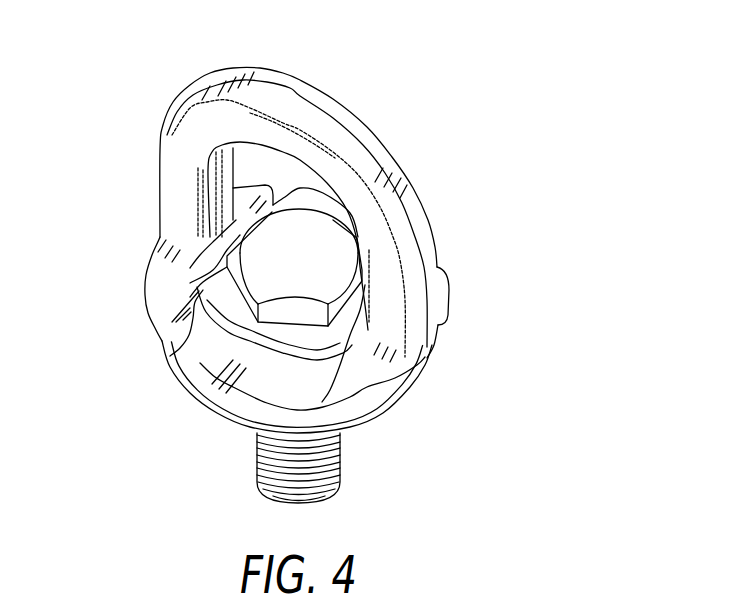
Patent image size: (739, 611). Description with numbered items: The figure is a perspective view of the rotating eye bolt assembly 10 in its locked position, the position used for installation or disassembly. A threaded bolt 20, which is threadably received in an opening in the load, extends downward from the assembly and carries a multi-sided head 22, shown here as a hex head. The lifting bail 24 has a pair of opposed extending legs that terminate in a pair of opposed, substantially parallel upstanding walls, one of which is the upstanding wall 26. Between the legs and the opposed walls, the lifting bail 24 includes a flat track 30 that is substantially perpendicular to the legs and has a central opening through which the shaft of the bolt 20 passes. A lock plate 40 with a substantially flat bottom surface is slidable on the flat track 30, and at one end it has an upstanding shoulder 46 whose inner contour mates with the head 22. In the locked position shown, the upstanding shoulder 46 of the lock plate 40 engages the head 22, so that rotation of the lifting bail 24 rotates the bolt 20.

The rotating eye bolt assembly 10 is at (525, 92).
The threaded bolt 20 is at (333, 455).
The multi-sided head 22 is at (342, 300).
The lifting bail 24 is at (337, 110).
The upstanding wall 26 is at (172, 353).
The flat track 30 is at (250, 387).
The lock plate 40 is at (317, 203).
The upstanding shoulder 46 is at (213, 278).